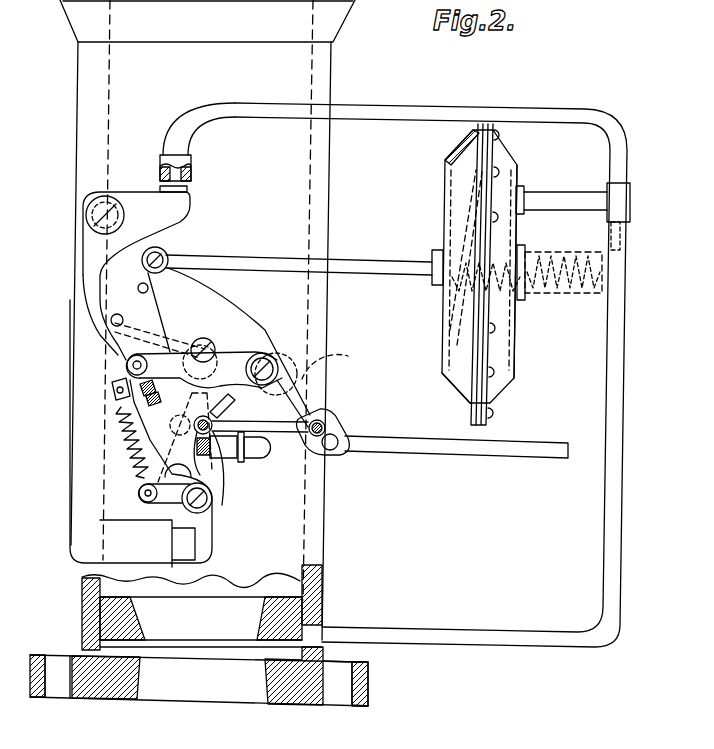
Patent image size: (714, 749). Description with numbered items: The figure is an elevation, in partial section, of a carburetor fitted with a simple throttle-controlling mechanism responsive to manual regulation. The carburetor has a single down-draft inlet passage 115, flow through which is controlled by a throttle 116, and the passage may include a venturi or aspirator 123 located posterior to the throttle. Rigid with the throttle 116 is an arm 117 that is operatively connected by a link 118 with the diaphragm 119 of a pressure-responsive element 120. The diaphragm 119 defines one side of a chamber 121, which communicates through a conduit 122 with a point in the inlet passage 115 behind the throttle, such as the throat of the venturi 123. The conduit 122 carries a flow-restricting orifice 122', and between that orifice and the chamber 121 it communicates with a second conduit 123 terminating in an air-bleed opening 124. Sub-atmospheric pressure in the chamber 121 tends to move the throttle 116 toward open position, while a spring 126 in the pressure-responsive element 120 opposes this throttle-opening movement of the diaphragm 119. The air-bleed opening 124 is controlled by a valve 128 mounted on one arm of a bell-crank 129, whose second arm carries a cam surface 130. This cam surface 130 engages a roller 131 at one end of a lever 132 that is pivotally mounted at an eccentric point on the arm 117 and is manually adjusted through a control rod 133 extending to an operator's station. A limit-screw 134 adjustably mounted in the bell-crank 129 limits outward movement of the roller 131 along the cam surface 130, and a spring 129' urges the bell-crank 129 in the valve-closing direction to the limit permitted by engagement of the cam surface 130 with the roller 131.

The down-draft inlet passage 115 is at (293, 588).
The throttle 116 is at (341, 367).
The arm 117 is at (248, 338).
The link 118 is at (400, 281).
The diaphragm 119 is at (445, 223).
The pressure-responsive element 120 is at (460, 397).
The chamber 121 is at (505, 345).
The conduit 122 is at (600, 360).
The flow-restricting orifice 122' is at (654, 260).
The second conduit 123 is at (415, 120).
The air-bleed opening 124 is at (192, 177).
The spring 126 is at (573, 298).
The valve 128 is at (187, 190).
The bell-crank 129 is at (121, 379).
The spring 129' is at (89, 442).
The cam surface 130 is at (113, 330).
The roller 131 is at (127, 378).
The lever 132 is at (325, 418).
The control rod 133 is at (462, 457).
The limit-screw 134 is at (181, 453).